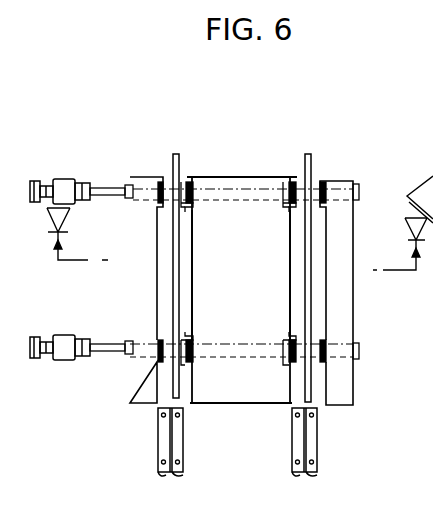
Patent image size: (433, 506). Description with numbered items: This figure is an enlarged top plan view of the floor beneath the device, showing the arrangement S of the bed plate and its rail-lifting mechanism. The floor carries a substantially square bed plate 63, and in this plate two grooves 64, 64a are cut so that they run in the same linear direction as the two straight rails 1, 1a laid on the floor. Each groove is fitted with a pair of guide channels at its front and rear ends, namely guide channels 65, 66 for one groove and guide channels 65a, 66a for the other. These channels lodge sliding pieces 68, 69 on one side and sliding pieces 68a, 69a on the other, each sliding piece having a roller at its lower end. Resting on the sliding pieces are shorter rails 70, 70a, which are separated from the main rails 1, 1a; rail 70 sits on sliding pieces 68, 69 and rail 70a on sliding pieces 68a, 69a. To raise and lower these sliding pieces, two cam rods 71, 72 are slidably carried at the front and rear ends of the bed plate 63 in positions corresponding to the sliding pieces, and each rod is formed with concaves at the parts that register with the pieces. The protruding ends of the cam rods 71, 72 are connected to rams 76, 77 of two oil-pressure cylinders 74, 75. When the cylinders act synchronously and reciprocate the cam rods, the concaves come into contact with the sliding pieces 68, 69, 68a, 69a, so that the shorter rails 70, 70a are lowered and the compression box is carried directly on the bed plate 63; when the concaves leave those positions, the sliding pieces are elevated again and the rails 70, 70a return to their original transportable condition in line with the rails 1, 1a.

The rail 1 is at (313, 447).
The rail 1a is at (164, 441).
The frame S is at (254, 155).
The bed plate 63 is at (243, 404).
The groove 64 is at (353, 283).
The groove 64a is at (130, 265).
The guide channel 65 is at (290, 182).
The guide channel 65a is at (158, 182).
The guide channel 66 is at (289, 362).
The guide channel 66a is at (156, 360).
The sliding piece 68 is at (291, 207).
The sliding piece 68a is at (190, 207).
The sliding piece 69 is at (291, 338).
The sliding piece 69a is at (186, 338).
The shorter rail 70 is at (289, 283).
The shorter rail 70a is at (192, 279).
The cam rod 71 is at (360, 192).
The cam rod 72 is at (360, 351).
The oil-pressure cylinder 74 is at (44, 183).
The oil-pressure cylinder 75 is at (42, 337).
The ram 76 is at (105, 188).
The ram 77 is at (105, 344).